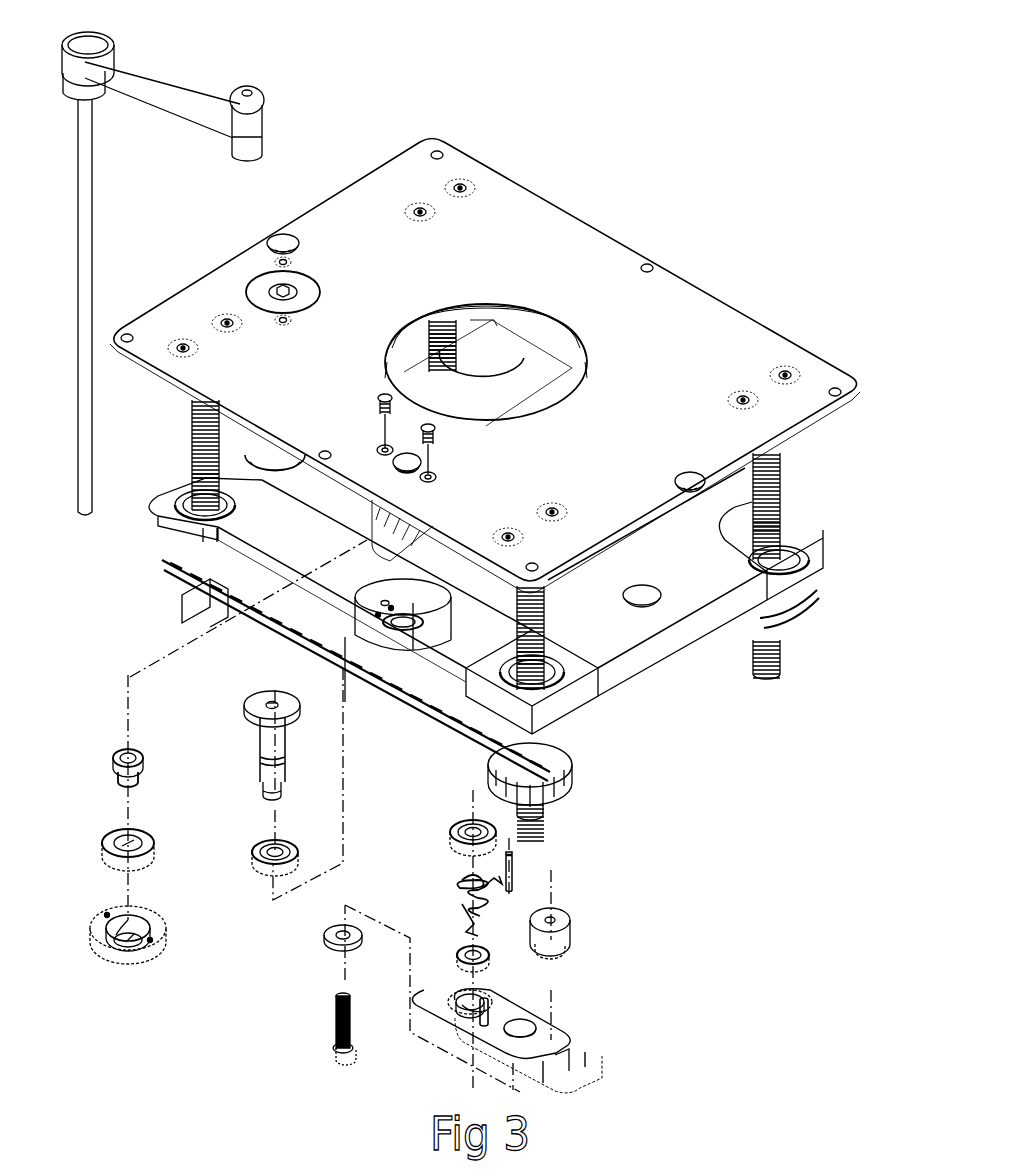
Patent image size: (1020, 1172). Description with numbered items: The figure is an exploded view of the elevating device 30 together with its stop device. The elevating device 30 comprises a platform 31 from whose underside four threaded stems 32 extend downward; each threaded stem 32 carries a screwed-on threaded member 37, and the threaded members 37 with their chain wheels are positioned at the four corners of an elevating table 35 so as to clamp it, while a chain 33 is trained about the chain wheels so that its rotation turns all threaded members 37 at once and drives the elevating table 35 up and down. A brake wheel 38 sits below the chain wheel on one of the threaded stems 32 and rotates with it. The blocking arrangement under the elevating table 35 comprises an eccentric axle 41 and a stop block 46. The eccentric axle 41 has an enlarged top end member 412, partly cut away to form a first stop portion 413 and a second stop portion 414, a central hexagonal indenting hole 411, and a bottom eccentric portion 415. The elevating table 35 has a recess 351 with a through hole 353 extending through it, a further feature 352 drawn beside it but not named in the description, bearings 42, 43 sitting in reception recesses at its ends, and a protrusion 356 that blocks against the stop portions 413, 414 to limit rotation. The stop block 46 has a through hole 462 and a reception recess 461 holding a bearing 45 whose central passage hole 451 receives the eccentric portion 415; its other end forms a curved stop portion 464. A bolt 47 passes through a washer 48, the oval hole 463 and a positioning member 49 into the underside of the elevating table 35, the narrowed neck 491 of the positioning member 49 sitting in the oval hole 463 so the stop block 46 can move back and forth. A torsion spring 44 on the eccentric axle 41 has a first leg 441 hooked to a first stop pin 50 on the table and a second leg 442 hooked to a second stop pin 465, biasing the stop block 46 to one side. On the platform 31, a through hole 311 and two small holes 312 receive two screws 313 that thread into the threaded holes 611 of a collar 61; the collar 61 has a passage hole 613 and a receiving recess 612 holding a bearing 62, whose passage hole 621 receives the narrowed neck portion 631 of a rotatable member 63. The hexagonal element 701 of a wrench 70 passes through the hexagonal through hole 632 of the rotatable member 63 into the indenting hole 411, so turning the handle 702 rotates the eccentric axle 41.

The elevating device 30 is at (660, 238).
The platform 31 is at (520, 188).
The through hole 311 is at (425, 474).
The small holes 312 is at (378, 446).
The screws 313 is at (377, 390).
The threaded stems 32 is at (192, 443).
The chain 33 is at (290, 608).
The elevating table 35 is at (222, 566).
The recess 351 is at (392, 618).
The pin 352 is at (396, 660).
The through hole 353 is at (413, 663).
The protrusion 356 is at (383, 605).
The threaded member 37 is at (162, 527).
The brake wheel 38 is at (580, 773).
The eccentric axle 41 is at (260, 746).
The hexagonal indenting hole 411 is at (265, 705).
The top end member 412 is at (290, 710).
The first stop portion 413 is at (258, 701).
The second stop portion 414 is at (292, 733).
The eccentric portion 415 is at (284, 790).
The bearing 42 is at (262, 863).
The bearing 43 is at (454, 841).
The torsion spring 44 is at (460, 900).
The first leg 441 is at (503, 896).
The second leg 442 is at (477, 930).
The bearing 45 is at (488, 958).
The central passage hole 451 is at (481, 952).
The stop block 46 is at (483, 1038).
The reception recess 461 is at (448, 1006).
The through hole 462 is at (474, 1020).
The oval hole 463 is at (532, 1027).
The stop portion 464 is at (571, 1053).
The second stop pin 465 is at (477, 1003).
The bolt 47 is at (338, 1030).
The washer 48 is at (330, 940).
The positioning member 49 is at (570, 931).
The narrowed neck 491 is at (557, 951).
The first stop pin 50 is at (517, 874).
The collar 61 is at (129, 953).
The threaded holes 611 is at (107, 914).
The receiving recess 612 is at (130, 922).
The passage hole 613 is at (138, 935).
The bearing 62 is at (155, 843).
The passage hole 621 is at (150, 838).
The rotatable member 63 is at (116, 754).
The narrowed neck portion 631 is at (150, 783).
The hexagonal through hole 632 is at (149, 757).
The wrench 70 is at (103, 232).
The hexagonal element 701 is at (94, 200).
The handle 702 is at (172, 96).